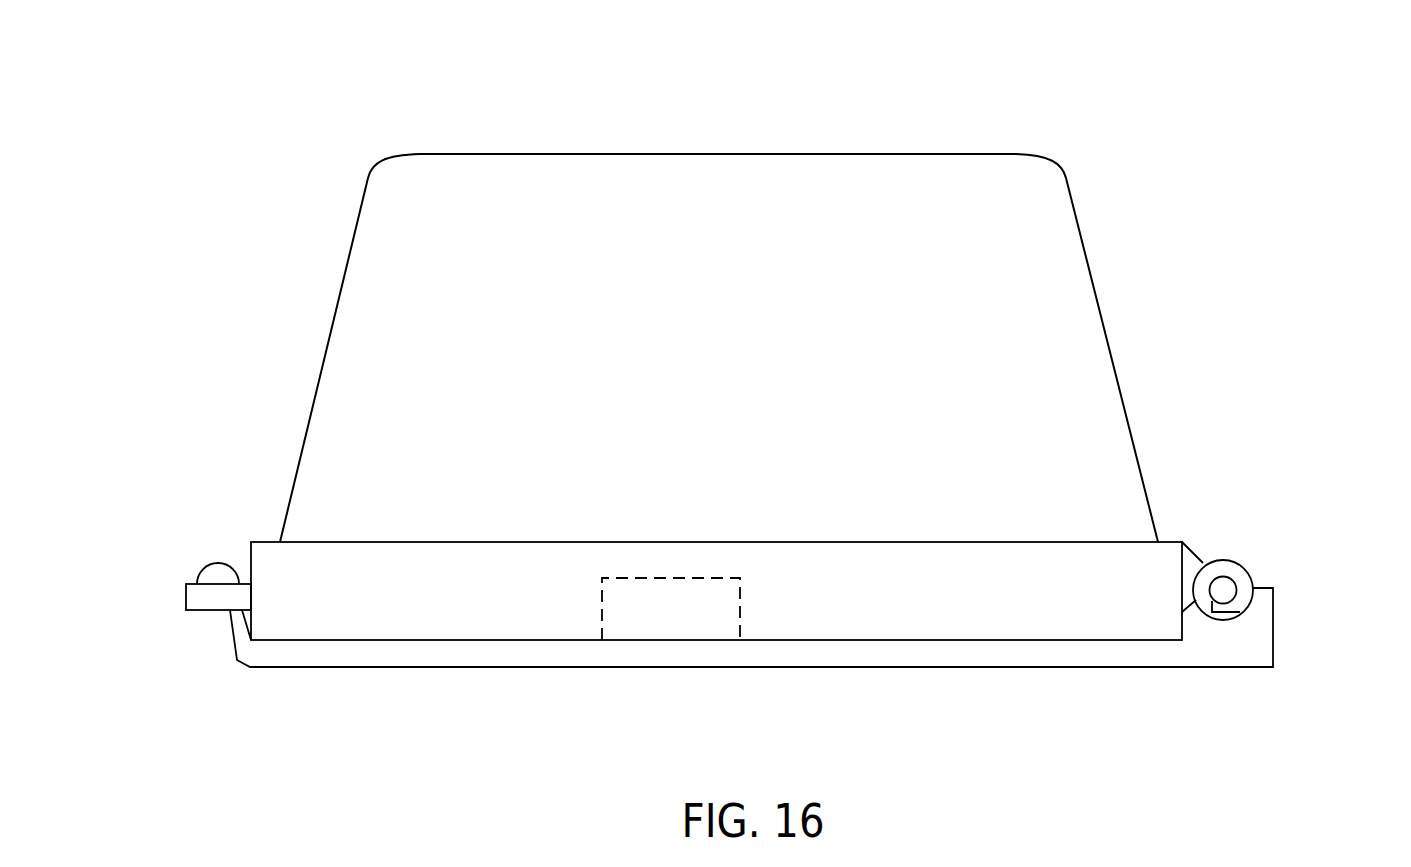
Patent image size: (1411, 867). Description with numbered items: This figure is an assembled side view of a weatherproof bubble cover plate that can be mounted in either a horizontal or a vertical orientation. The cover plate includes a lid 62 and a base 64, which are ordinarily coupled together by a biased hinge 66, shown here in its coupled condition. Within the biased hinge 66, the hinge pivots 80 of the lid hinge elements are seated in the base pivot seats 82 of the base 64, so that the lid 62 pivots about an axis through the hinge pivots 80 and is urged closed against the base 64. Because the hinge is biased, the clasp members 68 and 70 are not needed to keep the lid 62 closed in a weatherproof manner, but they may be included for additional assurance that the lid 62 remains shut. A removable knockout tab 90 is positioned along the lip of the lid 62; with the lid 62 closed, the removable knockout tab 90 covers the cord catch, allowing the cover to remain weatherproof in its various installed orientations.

The lid 62 is at (1095, 288).
The base 64 is at (886, 652).
The biased hinge 66 is at (1328, 548).
The clasp member 68 is at (200, 594).
The clasp member 70 is at (222, 570).
The hinge pivot 80 is at (1222, 590).
The base pivot seat 82 is at (1235, 607).
The removable knockout tab 90 is at (652, 613).